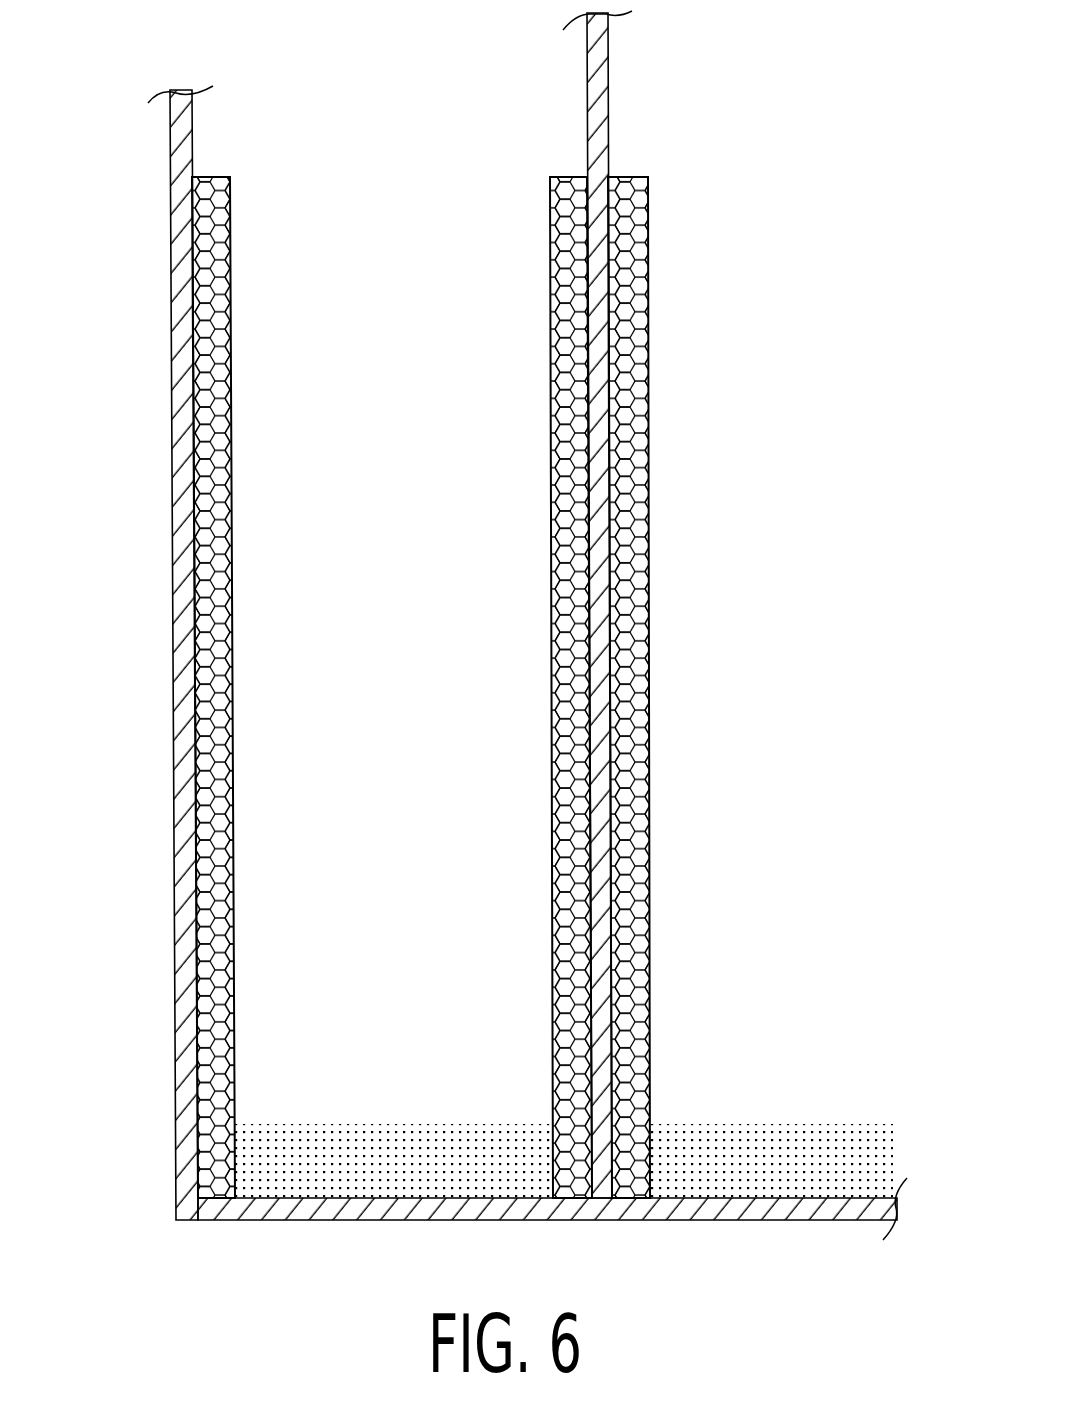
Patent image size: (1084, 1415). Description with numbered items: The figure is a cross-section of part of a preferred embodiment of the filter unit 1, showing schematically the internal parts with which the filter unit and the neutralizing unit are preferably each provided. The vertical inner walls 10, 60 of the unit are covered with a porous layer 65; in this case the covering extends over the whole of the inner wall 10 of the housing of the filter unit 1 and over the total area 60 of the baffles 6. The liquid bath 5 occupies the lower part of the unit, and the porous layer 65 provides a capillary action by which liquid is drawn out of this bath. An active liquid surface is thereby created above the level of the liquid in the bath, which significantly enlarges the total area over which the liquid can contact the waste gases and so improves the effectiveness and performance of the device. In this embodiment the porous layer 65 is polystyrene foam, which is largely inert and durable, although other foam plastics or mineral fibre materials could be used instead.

The filter unit 1 is at (172, 612).
The inner wall 10 is at (192, 137).
The baffle 6 is at (587, 111).
The total area of baffles 60 is at (608, 100).
The porous layer 65 is at (218, 358).
The absorbent material 5 is at (218, 628).